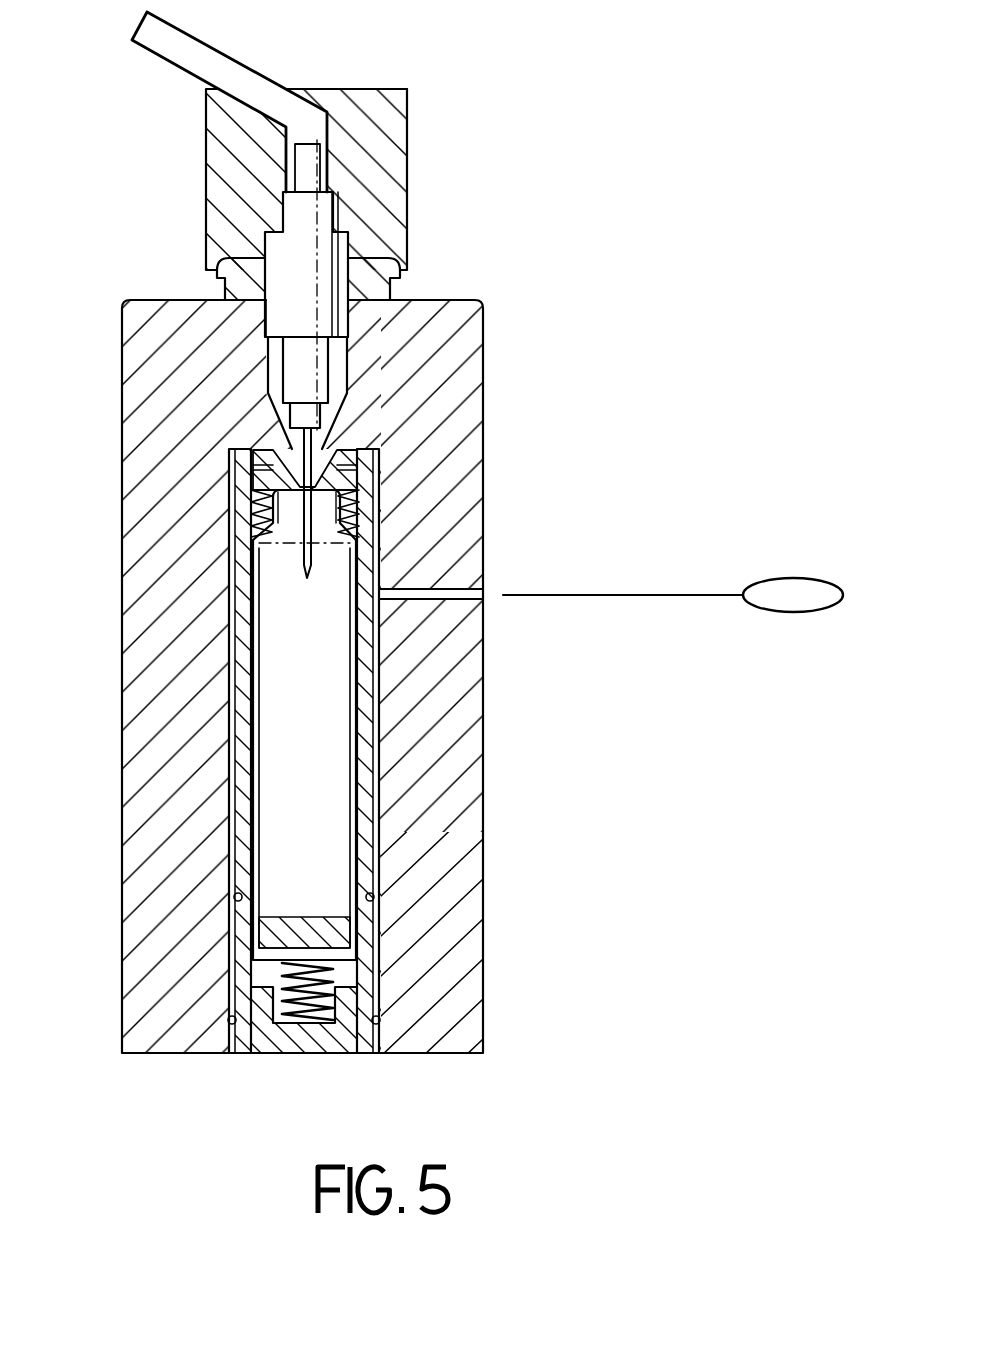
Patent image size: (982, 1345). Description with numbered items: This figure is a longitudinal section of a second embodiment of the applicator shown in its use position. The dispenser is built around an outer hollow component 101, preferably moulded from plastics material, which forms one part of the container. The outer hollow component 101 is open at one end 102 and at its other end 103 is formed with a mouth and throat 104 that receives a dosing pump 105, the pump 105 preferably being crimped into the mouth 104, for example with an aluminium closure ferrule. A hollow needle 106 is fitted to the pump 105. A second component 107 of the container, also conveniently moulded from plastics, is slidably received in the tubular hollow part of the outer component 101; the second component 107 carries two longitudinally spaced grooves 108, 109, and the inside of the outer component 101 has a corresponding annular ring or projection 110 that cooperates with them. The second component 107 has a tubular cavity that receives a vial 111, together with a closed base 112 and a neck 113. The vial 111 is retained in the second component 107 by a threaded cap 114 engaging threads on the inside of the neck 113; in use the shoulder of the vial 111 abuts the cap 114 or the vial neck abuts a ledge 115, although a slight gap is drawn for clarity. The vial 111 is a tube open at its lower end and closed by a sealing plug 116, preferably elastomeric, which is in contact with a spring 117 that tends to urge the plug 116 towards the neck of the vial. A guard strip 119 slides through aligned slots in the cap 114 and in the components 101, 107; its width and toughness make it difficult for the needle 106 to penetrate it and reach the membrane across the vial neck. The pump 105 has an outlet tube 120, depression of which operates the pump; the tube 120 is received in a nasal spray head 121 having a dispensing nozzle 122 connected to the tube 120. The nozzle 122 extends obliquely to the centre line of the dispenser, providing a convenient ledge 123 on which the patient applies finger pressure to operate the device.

The outer hollow component 101 is at (483, 719).
The open end 102 is at (351, 1054).
The other end 103 is at (235, 312).
The mouth and throat 104 is at (345, 372).
The dosing pump 105 is at (327, 254).
The hollow needle 106 is at (290, 455).
The second component 107 is at (237, 722).
The groove 108 is at (235, 897).
The groove 109 is at (232, 1020).
The annular ring or projection 110 is at (378, 1020).
The vial 111 is at (340, 822).
The closed base 112 is at (268, 1046).
The neck 113 is at (268, 514).
The threaded cap 114 is at (350, 450).
The ledge 115 is at (345, 492).
The sealing plug 116 is at (270, 935).
The spring 117 is at (330, 975).
The guard strip 119 is at (607, 597).
The outlet tube 120 is at (303, 168).
The nasal spray head 121 is at (410, 108).
The dispensing nozzle 122 is at (190, 60).
The ledge 123 is at (347, 89).